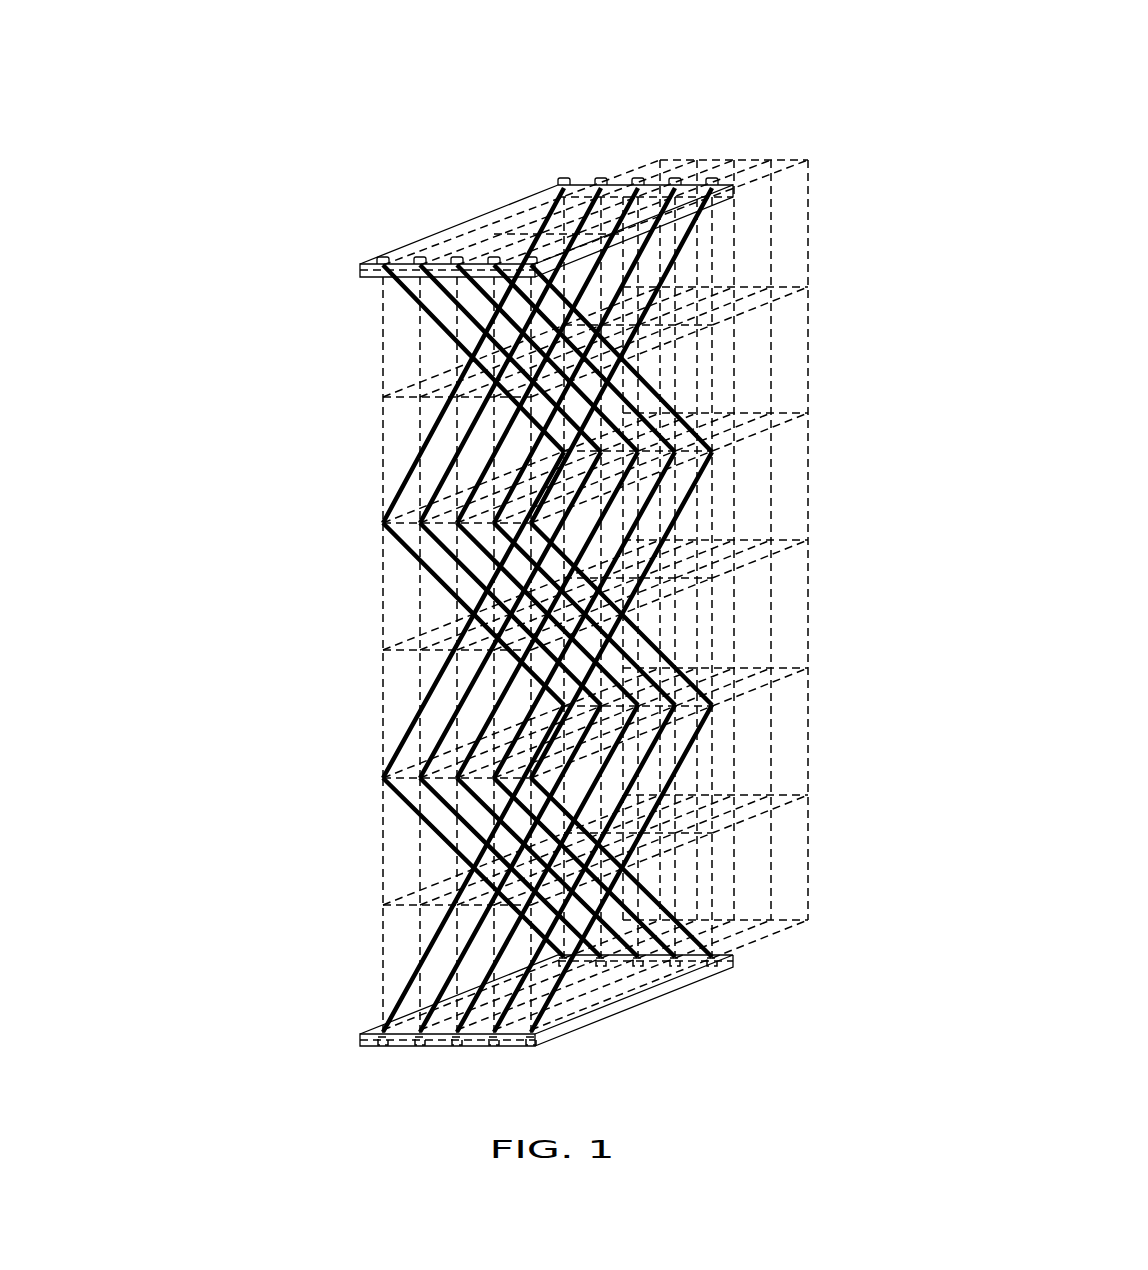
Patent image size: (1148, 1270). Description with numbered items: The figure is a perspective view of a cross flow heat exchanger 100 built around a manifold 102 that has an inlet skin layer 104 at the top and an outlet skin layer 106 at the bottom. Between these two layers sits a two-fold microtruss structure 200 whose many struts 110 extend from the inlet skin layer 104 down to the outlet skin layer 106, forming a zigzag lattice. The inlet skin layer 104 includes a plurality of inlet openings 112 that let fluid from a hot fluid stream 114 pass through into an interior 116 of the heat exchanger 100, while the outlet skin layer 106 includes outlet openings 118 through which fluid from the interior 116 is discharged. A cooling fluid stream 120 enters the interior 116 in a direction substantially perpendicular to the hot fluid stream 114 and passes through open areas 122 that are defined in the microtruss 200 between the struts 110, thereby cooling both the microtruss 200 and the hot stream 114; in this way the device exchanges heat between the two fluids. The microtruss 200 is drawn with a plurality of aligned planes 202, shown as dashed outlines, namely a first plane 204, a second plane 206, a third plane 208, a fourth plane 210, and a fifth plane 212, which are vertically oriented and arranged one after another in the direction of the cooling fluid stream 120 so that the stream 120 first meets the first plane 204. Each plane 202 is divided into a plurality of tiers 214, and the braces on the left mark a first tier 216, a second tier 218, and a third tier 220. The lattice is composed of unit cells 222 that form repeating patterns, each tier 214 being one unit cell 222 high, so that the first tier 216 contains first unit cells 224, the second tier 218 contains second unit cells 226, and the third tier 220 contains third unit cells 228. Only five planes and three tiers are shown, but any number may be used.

The cross flow heat exchanger 100 is at (315, 190).
The manifold 102 is at (552, 183).
The inlet skin layer 104 is at (512, 225).
The outlet skin layer 106 is at (628, 1003).
The struts 110 is at (658, 652).
The inlet openings 112 is at (442, 262).
The hot fluid stream 114 is at (450, 222).
The interior 116 is at (667, 733).
The outlet openings 118 is at (545, 1040).
The cooling fluid stream 120 is at (819, 428).
The open areas 122 is at (649, 520).
The microtruss structure 200 is at (669, 392).
The aligned planes 202 is at (778, 78).
The first plane 204 is at (808, 160).
The second plane 206 is at (771, 160).
The third plane 208 is at (734, 160).
The fourth plane 210 is at (697, 160).
The fifth plane 212 is at (660, 160).
The tiers 214 is at (216, 593).
The first tier 216 is at (345, 779).
The second tier 218 is at (345, 526).
The third tier 220 is at (348, 270).
The unit cells 222 is at (277, 525).
The first unit cells 224 is at (373, 903).
The second unit cells 226 is at (373, 645).
The third unit cells 228 is at (375, 397).